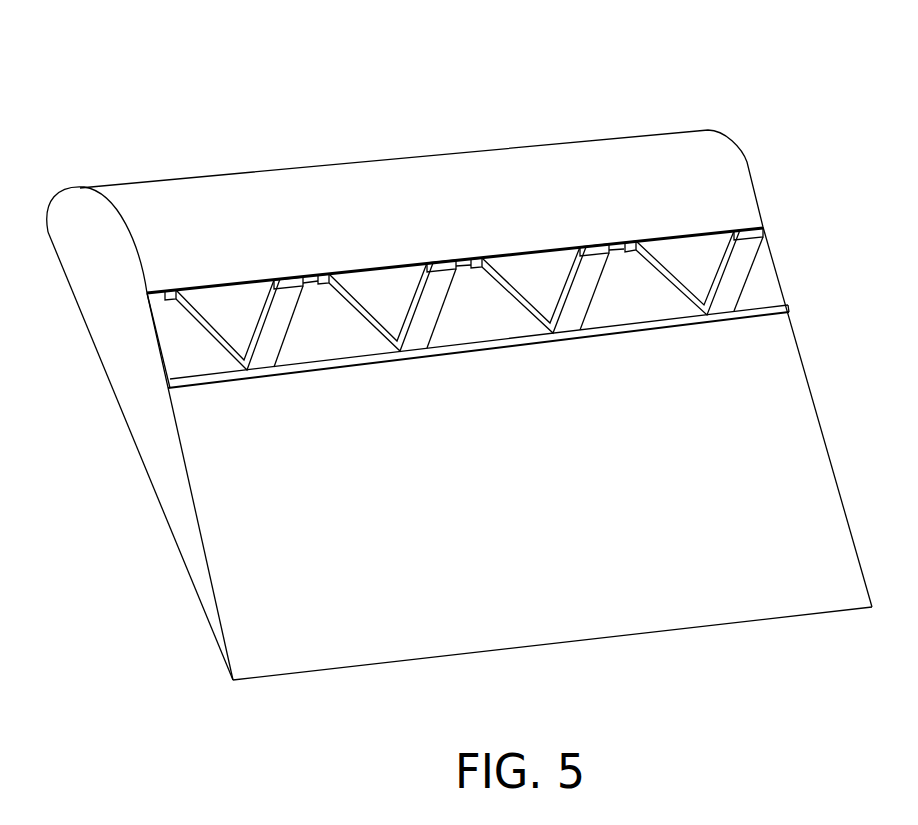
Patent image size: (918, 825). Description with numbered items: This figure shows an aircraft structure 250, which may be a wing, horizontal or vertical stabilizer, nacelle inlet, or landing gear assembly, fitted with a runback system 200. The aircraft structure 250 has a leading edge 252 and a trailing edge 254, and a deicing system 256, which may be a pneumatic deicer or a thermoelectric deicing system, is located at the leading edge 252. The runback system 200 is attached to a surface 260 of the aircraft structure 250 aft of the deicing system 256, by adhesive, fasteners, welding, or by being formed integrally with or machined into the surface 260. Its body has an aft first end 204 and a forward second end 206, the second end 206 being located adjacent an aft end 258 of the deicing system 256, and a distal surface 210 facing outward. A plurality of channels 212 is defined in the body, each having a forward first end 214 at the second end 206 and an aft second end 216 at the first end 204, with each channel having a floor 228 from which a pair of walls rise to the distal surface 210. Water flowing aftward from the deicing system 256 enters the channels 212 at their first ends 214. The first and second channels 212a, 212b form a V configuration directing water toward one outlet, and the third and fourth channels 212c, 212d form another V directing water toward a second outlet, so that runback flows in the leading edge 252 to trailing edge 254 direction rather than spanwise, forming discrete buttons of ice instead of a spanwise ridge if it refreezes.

The runback system 200 is at (783, 220).
The first end 204 is at (313, 368).
The second end 206 is at (232, 284).
The distal surface 210 is at (479, 256).
The channels 212 is at (759, 224).
The first channel 212a is at (413, 296).
The second channel 212b is at (351, 297).
The third channel 212c is at (509, 276).
The fourth channel 212d is at (574, 275).
The first end 214 is at (635, 247).
The second end 216 is at (693, 326).
The floor 228 is at (522, 317).
The aircraft structure 250 is at (661, 96).
The leading edge 252 is at (74, 188).
The trailing edge 254 is at (283, 678).
The deicing system 256 is at (288, 194).
The aft end 258 is at (164, 301).
The surface 260 is at (460, 453).